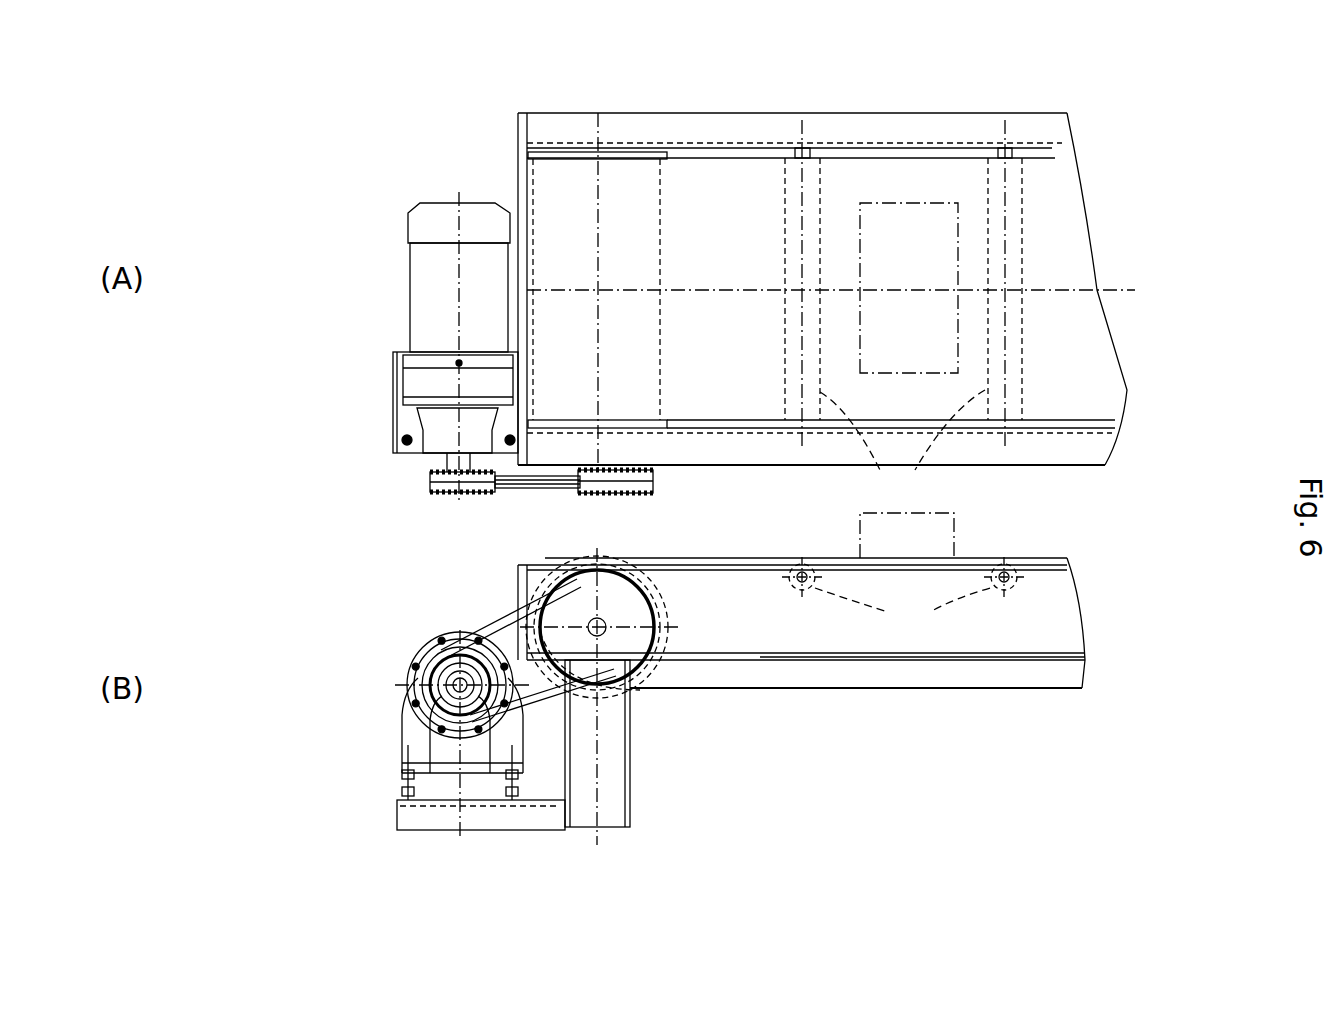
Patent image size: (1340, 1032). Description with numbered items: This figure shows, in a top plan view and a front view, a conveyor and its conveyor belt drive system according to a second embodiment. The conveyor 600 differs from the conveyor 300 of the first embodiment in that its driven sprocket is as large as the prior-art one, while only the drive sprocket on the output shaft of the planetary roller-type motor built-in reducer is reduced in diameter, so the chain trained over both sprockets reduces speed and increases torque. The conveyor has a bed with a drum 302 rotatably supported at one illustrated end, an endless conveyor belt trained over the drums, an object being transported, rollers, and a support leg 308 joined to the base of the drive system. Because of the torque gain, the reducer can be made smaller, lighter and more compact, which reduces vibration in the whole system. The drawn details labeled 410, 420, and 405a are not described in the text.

The conveyor 300 is at (605, 86).
The drum 302 is at (662, 227).
The support leg 308 is at (632, 810).
The chain cover 405a is at (657, 665).
The motor 410 is at (405, 300).
The reduction gear 420 is at (420, 380).
The conveyor 600 is at (805, 518).